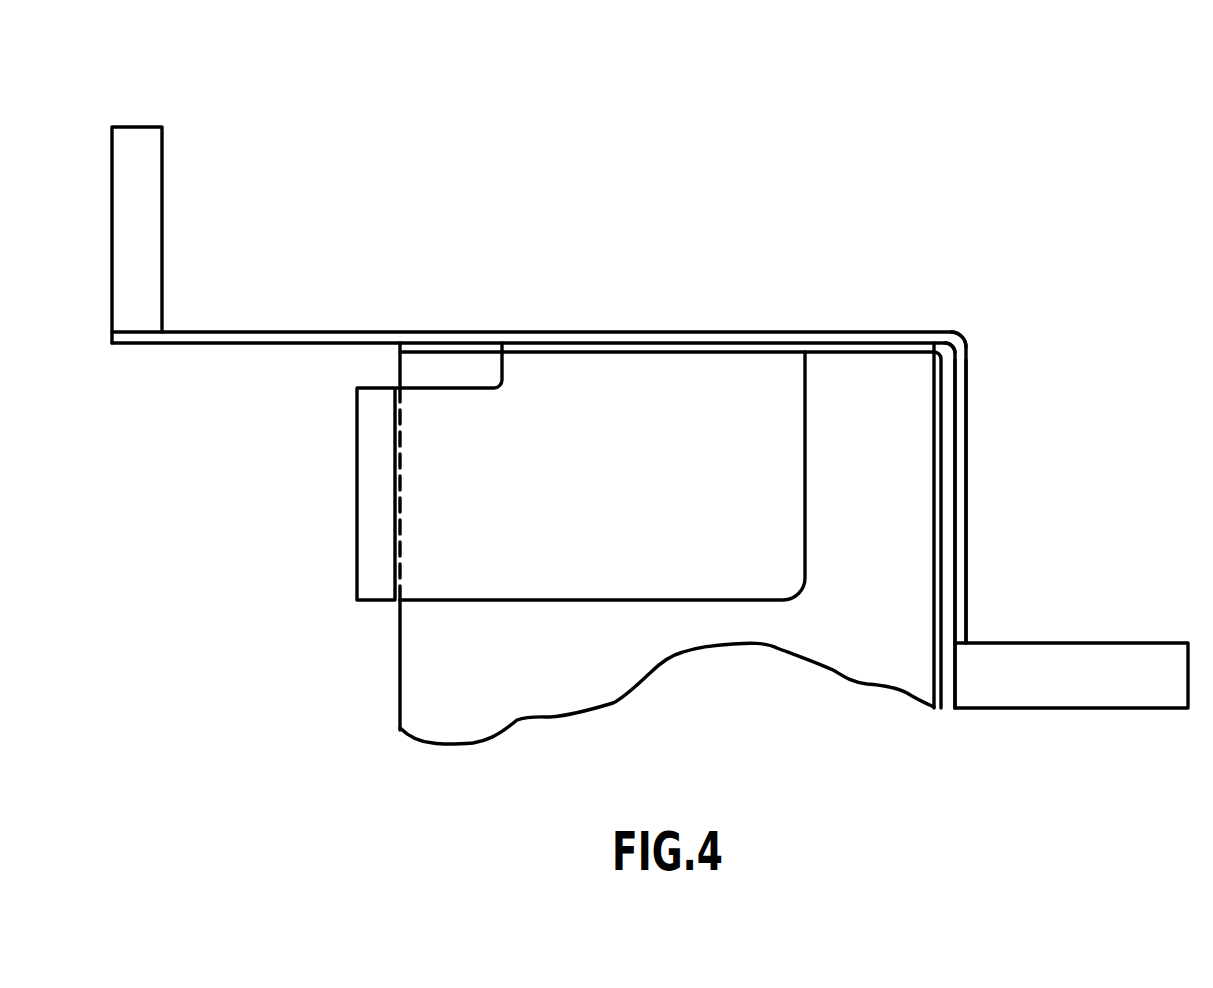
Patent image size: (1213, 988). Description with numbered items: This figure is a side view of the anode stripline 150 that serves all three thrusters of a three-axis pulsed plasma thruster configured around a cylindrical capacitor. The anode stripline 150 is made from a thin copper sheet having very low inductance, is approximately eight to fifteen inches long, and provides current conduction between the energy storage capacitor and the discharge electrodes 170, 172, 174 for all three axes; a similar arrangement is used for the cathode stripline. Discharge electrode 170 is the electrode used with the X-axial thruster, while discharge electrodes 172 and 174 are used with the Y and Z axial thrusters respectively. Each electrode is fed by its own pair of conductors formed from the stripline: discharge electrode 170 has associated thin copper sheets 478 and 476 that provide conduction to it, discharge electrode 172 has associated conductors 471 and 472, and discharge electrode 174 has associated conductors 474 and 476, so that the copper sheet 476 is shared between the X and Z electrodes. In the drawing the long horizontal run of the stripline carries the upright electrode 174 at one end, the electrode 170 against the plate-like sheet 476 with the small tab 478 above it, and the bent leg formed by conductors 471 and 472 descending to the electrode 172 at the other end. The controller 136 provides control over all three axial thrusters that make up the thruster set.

The anode stripline 150 is at (965, 51).
The controller 136 is at (893, 560).
The discharge electrode 170 is at (375, 525).
The discharge electrode 172 is at (1072, 680).
The discharge electrode 174 is at (147, 203).
The conductor 471 is at (955, 458).
The conductor 472 is at (965, 418).
The conductor 474 is at (698, 332).
The thin copper sheet 476 is at (608, 343).
The thin copper sheet 478 is at (458, 387).